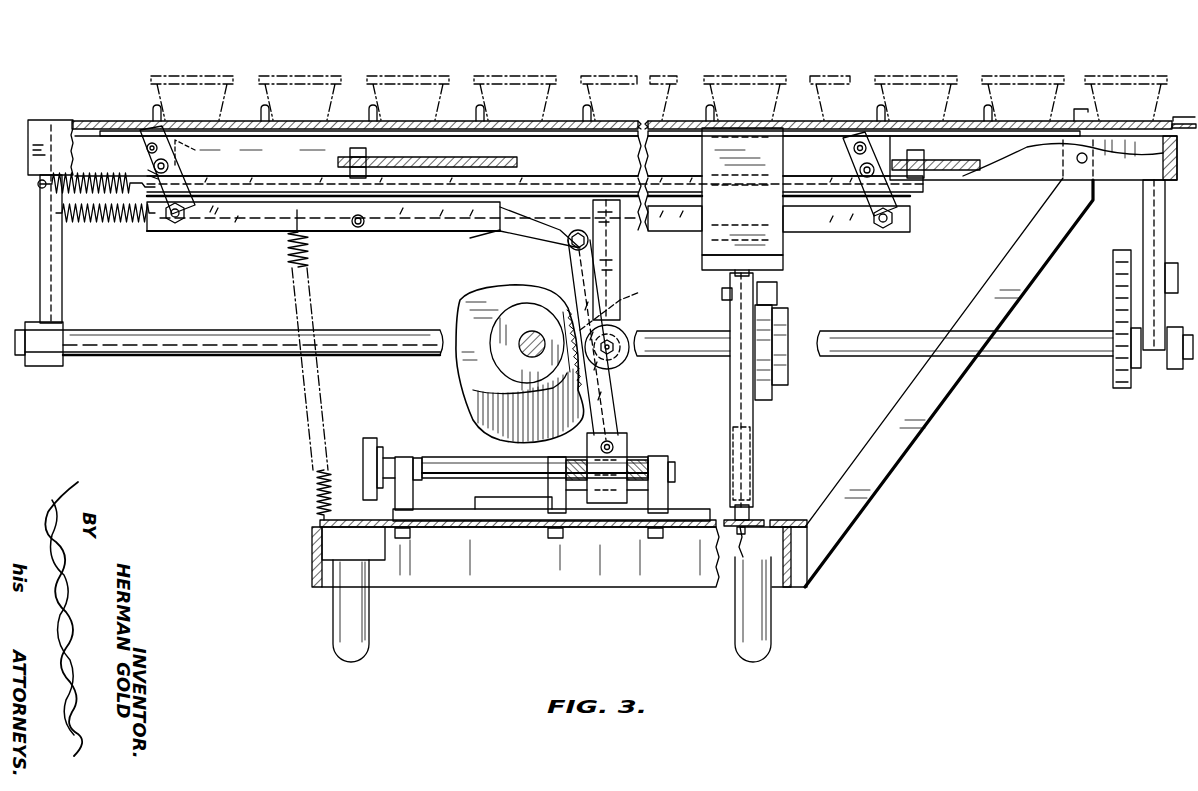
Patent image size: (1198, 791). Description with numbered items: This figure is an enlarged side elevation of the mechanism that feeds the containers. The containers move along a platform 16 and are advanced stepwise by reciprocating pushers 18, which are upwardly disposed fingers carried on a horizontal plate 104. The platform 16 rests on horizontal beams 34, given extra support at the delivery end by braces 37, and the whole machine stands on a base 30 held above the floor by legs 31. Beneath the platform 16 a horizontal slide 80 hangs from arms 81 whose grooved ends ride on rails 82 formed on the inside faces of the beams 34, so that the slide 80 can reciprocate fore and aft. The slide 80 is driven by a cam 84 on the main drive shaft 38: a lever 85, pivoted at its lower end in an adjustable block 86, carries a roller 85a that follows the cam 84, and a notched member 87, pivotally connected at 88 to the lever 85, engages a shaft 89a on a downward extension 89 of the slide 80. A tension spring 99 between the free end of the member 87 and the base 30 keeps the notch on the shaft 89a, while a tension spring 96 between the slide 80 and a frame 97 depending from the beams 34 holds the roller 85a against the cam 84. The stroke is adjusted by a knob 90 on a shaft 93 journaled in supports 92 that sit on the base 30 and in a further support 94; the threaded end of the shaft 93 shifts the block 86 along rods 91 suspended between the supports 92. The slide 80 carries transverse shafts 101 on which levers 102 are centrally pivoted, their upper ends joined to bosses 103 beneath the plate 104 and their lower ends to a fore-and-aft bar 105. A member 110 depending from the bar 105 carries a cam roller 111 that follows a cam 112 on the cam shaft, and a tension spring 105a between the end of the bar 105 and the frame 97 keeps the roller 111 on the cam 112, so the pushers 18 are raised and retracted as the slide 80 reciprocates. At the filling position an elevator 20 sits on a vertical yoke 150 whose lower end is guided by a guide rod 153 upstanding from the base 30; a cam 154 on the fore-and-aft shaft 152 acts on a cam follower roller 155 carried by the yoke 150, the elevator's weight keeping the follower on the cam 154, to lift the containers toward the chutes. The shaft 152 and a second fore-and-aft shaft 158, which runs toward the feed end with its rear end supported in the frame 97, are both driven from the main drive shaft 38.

The platform 16 is at (86, 121).
The pushers 18 is at (480, 115).
The elevator 20 is at (702, 250).
The base 30 is at (612, 527).
The legs 31 is at (770, 652).
The beams 34 is at (1118, 181).
The braces 37 is at (908, 440).
The main drive shaft 38 is at (520, 346).
The slide 80 is at (910, 197).
The arms 81 is at (348, 153).
The rails 82 is at (510, 158).
The cam 84 is at (475, 410).
The lever 85 is at (606, 402).
The roller 85a is at (640, 292).
The adjustable block 86 is at (624, 446).
The notched member 87 is at (470, 238).
The pivotal connection 88 is at (580, 230).
The downward extension 89 is at (360, 229).
The shaft 89a is at (312, 252).
The knob 90 is at (370, 437).
The rods 91 is at (577, 521).
The supports 92 is at (548, 460).
The shaft 93 is at (458, 448).
The support 94 is at (404, 456).
The tension spring 96 is at (118, 174).
The frame 97 is at (40, 240).
The tension spring 99 is at (315, 480).
The transverse shafts 101 is at (168, 165).
The levers 102 is at (178, 192).
The bosses 103 is at (145, 160).
The plate 104 is at (238, 131).
The bar 105 is at (213, 233).
The tension spring 105a is at (106, 222).
The downwardly depending member 110 is at (616, 258).
The cam roller 111 is at (622, 340).
The cam 112 is at (465, 335).
The yoke 150 is at (730, 386).
The fore-and-aft shaft 152 is at (866, 338).
The guide rod 153 is at (752, 512).
The cam 154 is at (775, 400).
The cam follower roller 155 is at (778, 295).
The fore-and-aft shaft 158 is at (130, 359).